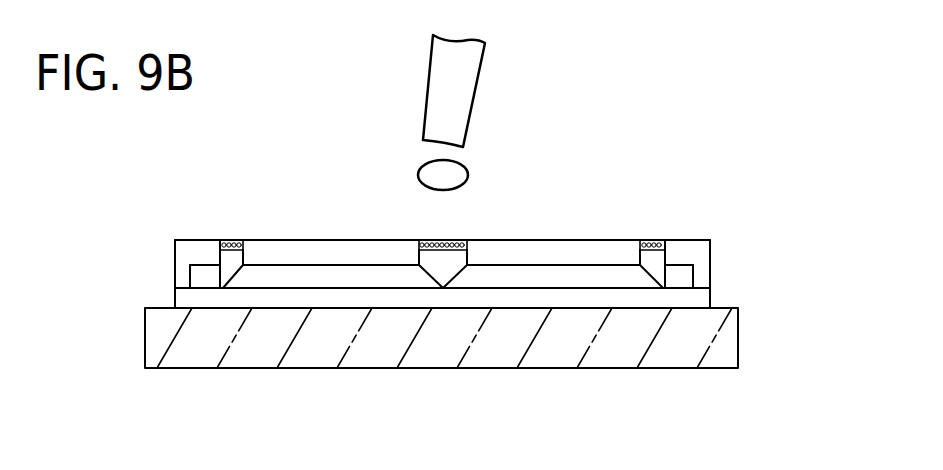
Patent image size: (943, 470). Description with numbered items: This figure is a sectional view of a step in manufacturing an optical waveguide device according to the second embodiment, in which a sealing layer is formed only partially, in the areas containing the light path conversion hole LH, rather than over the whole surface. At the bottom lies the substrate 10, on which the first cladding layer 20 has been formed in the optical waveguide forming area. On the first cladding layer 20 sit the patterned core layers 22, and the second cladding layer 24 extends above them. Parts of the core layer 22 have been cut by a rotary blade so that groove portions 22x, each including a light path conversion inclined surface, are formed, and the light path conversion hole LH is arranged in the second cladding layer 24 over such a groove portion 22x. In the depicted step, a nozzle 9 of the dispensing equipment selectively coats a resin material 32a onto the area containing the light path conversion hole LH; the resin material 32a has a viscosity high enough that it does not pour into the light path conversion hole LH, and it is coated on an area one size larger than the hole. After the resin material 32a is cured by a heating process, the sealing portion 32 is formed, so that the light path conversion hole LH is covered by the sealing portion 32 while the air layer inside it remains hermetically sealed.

The nozzle 9 is at (460, 90).
The resin material 32a is at (454, 178).
The sealing portion 32 is at (448, 240).
The second cladding layer 24 is at (523, 248).
The core layer 22 is at (547, 275).
The light path conversion hole LH is at (665, 250).
The groove portion 22x is at (666, 276).
The first cladding layer 20 is at (702, 297).
The substrate 10 is at (730, 342).